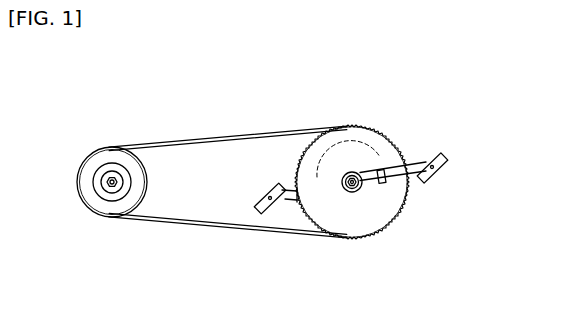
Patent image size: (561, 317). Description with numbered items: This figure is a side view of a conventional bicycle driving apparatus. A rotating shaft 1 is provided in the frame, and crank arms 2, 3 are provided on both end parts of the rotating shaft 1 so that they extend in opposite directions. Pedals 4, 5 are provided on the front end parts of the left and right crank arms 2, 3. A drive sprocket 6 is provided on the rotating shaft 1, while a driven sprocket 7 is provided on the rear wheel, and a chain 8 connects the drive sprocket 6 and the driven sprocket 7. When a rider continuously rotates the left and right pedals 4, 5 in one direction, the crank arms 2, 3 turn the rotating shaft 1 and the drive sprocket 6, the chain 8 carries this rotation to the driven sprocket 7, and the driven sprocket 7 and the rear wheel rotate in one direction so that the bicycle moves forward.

The rotating shaft 1 is at (347, 203).
The crank arm 2 is at (282, 245).
The crank arm 3 is at (395, 140).
The pedal 4 is at (270, 137).
The pedal 5 is at (449, 168).
The drive sprocket 6 is at (352, 218).
The driven sprocket 7 is at (79, 191).
The chain 8 is at (228, 217).